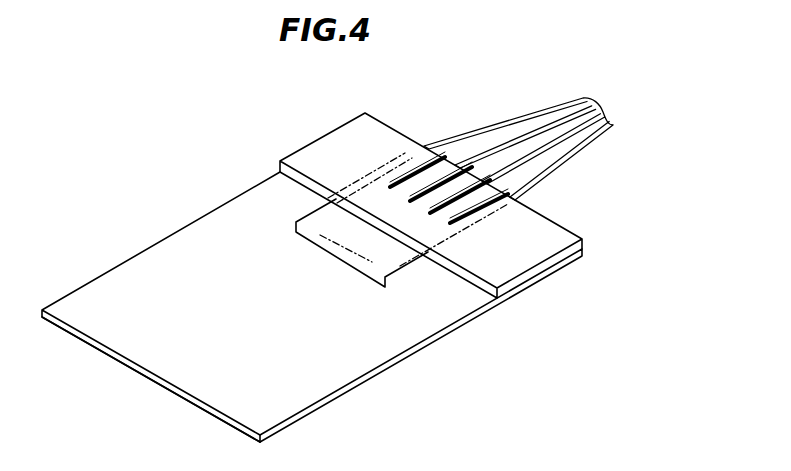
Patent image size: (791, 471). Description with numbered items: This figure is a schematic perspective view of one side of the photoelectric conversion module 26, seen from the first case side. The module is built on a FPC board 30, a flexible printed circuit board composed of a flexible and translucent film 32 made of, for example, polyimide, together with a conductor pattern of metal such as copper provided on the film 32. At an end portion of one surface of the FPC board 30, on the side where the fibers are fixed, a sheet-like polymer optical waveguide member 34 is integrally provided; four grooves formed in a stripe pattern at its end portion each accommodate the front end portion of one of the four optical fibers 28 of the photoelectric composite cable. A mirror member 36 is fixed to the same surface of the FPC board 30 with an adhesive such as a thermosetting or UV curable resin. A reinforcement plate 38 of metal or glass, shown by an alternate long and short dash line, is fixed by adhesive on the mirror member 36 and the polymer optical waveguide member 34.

The photoelectric conversion module 26 is at (212, 226).
The optical fibers 28 is at (583, 150).
The FPC board 30 is at (382, 375).
The film 32 is at (433, 347).
The polymer optical waveguide member 34 is at (543, 253).
The mirror member 36 is at (412, 262).
The reinforcement plate 38 is at (352, 188).